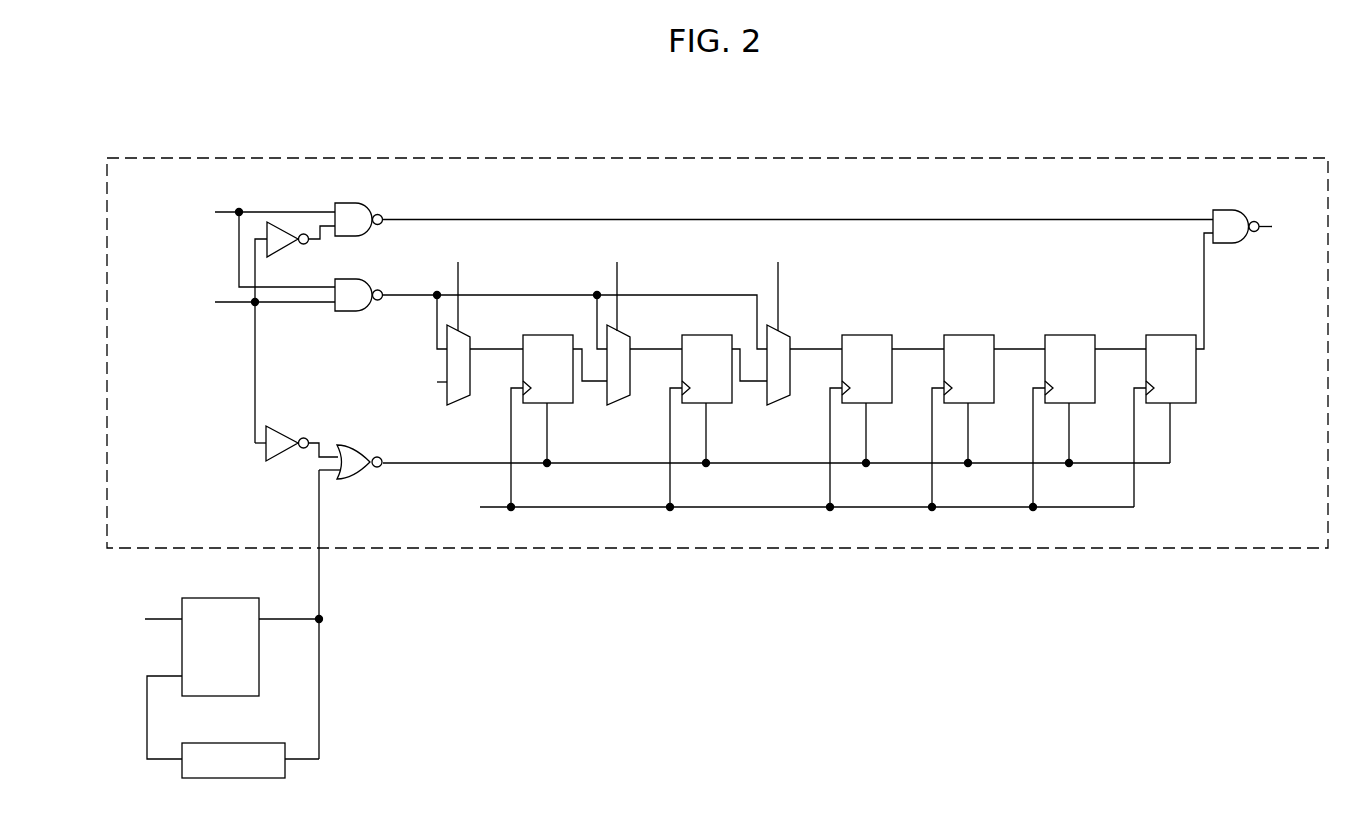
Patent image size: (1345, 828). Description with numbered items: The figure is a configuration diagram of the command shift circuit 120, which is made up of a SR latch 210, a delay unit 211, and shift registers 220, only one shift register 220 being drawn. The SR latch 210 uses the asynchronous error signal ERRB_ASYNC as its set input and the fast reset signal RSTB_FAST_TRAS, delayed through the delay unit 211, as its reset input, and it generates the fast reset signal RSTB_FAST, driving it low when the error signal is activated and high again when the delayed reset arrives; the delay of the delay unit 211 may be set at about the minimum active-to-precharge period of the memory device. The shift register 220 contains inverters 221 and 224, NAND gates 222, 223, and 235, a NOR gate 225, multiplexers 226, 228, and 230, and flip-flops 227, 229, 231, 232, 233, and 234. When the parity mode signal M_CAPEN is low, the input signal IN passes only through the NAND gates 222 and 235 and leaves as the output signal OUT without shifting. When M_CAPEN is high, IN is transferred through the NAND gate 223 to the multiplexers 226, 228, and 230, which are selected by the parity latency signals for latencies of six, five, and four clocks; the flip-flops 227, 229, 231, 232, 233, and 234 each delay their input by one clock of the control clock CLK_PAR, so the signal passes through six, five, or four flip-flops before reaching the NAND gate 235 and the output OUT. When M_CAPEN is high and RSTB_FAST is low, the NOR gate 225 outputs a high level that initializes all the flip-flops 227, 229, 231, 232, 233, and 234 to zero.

The command shift circuit 120 is at (1043, 119).
The SR latch 210 is at (213, 598).
The delay unit 211 is at (238, 743).
The shift register 220 is at (1252, 158).
The inverter 221 is at (283, 253).
The NAND gate 222 is at (348, 203).
The NAND gate 223 is at (348, 279).
The inverter 224 is at (283, 432).
The NOR gate 225 is at (355, 447).
The multiplexer 226 is at (456, 403).
The flip-flop 227 is at (553, 403).
The multiplexer 228 is at (616, 403).
The flip-flop 229 is at (712, 403).
The multiplexer 230 is at (776, 403).
The flip-flop 231 is at (873, 403).
The flip-flop 232 is at (975, 403).
The flip-flop 233 is at (1075, 403).
The flip-flop 234 is at (1178, 403).
The NAND gate 235 is at (1222, 210).